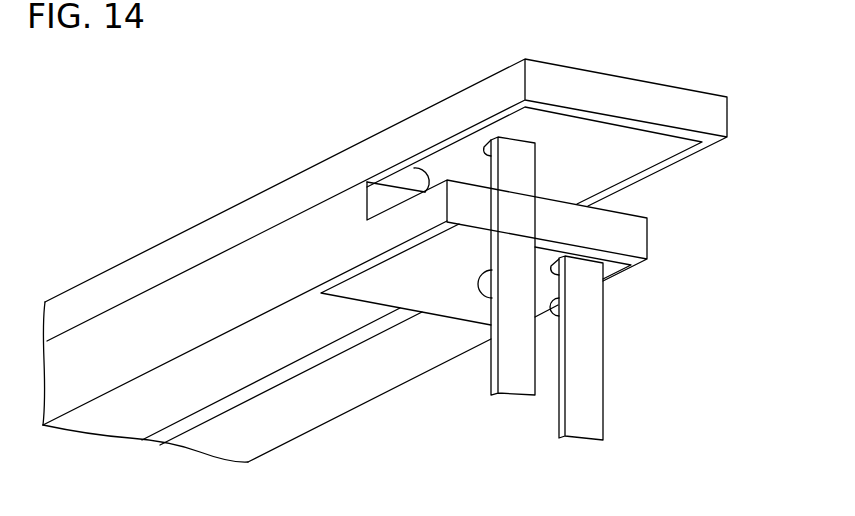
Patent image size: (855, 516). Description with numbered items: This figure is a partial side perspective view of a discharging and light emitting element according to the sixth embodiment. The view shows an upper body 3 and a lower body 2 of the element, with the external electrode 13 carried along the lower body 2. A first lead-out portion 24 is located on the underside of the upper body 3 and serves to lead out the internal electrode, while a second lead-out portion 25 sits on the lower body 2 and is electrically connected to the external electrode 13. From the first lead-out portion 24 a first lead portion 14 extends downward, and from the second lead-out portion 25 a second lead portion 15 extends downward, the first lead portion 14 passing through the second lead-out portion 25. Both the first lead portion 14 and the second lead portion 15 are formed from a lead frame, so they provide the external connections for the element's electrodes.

The lower slab 2 is at (365, 386).
The upper slab 3 is at (432, 118).
The external electrode 13 is at (317, 358).
The first lead portion 14 is at (513, 385).
The second lead portion 15 is at (580, 430).
The first lead-out portion 24 is at (588, 142).
The second lead-out portion 25 is at (455, 305).